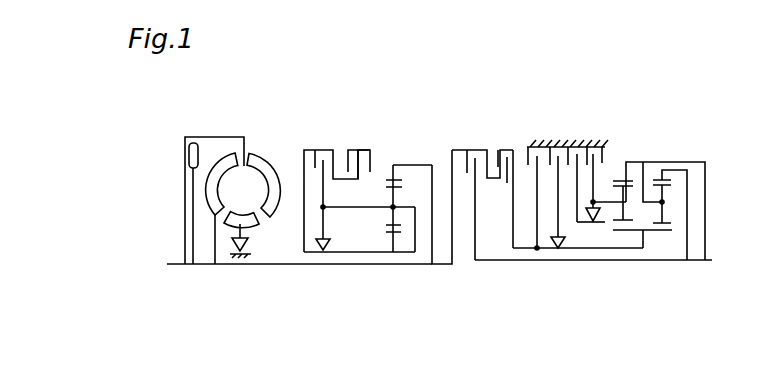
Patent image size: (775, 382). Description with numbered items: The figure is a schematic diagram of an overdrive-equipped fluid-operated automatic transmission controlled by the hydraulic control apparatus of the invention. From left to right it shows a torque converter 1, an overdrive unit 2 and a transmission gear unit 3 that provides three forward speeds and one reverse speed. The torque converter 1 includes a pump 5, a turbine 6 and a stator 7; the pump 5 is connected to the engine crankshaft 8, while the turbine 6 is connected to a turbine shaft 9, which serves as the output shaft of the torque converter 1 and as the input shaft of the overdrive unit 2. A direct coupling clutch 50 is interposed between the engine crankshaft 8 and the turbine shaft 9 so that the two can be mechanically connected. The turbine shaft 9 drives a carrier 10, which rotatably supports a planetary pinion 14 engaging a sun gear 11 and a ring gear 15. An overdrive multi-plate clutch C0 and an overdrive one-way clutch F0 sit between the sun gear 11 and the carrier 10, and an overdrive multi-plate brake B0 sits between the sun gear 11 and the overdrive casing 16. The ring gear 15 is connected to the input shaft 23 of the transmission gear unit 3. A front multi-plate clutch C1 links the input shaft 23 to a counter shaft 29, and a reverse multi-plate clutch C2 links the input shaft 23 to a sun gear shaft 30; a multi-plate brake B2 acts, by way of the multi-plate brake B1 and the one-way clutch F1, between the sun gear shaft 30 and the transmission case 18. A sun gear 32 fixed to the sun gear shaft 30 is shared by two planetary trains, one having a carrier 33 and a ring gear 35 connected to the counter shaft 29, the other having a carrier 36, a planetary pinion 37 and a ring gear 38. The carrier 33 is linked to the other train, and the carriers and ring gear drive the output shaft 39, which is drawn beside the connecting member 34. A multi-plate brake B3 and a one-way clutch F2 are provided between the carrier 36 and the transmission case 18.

The torque converter 1 is at (236, 133).
The overdrive unit 2 is at (368, 139).
The transmission gear unit 3 is at (588, 137).
The pump 5 is at (262, 162).
The turbine 6 is at (222, 163).
The stator 7 is at (254, 221).
The engine crankshaft 8 is at (172, 263).
The turbine shaft 9 is at (326, 264).
The carrier 10 is at (397, 200).
The sun gear 11 is at (388, 231).
The planetary pinion 14 is at (387, 193).
The ring gear 15 is at (385, 173).
The overdrive casing 16 is at (365, 138).
The transmission case 18 is at (577, 145).
The input shaft 23 is at (437, 265).
The counter shaft 29 is at (512, 261).
The sun gear shaft 30 is at (535, 246).
The sun gear 32 is at (645, 232).
The carrier 33 is at (665, 163).
The sun gear 34 is at (666, 190).
The ring gear 35 is at (668, 172).
The carrier 36 is at (605, 147).
The planetary pinion 37 is at (615, 221).
The ring gear 38 is at (627, 179).
The output shaft 39 is at (706, 261).
The direct coupling clutch 50 is at (183, 146).
The overdrive multi-plate clutch C0 is at (322, 149).
The front multi-plate clutch C1 is at (467, 149).
The reverse multi-plate clutch C2 is at (500, 149).
The overdrive multi-plate brake B0 is at (372, 153).
The multi-plate brake B1 is at (531, 146).
The multi-plate brake B2 is at (556, 146).
The multi-plate brake B3 is at (598, 146).
The overdrive one-way clutch F0 is at (334, 228).
The one-way clutch F1 is at (547, 262).
The one-way clutch F2 is at (585, 261).